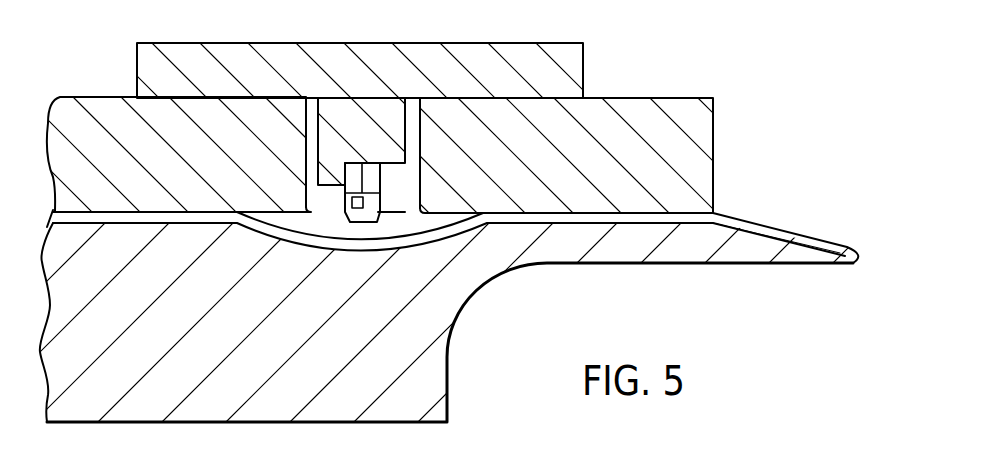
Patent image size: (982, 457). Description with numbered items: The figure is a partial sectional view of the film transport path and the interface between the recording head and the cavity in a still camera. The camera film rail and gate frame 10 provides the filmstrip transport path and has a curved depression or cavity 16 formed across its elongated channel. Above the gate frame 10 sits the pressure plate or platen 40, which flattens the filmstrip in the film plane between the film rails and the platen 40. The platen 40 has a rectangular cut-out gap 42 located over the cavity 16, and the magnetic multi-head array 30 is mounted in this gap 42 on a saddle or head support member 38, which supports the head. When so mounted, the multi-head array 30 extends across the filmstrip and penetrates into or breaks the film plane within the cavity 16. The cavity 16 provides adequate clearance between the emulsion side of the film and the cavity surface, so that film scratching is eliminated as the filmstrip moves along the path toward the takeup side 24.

The camera film rail and gate frame 10 is at (430, 378).
The curved depression or cavity 16 is at (393, 230).
The takeup side 24 is at (760, 208).
The magnetic multi-head array 30 is at (363, 202).
The saddle or head support member 38 is at (148, 75).
The platen 40 is at (107, 115).
The gap 42 is at (410, 143).